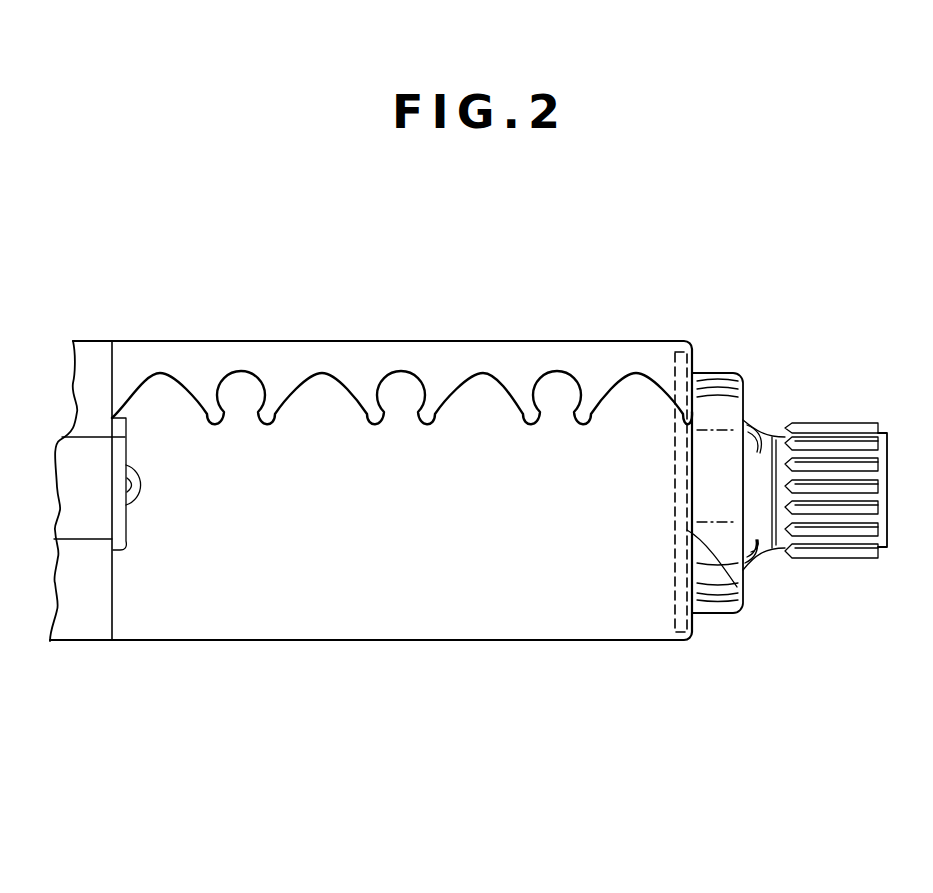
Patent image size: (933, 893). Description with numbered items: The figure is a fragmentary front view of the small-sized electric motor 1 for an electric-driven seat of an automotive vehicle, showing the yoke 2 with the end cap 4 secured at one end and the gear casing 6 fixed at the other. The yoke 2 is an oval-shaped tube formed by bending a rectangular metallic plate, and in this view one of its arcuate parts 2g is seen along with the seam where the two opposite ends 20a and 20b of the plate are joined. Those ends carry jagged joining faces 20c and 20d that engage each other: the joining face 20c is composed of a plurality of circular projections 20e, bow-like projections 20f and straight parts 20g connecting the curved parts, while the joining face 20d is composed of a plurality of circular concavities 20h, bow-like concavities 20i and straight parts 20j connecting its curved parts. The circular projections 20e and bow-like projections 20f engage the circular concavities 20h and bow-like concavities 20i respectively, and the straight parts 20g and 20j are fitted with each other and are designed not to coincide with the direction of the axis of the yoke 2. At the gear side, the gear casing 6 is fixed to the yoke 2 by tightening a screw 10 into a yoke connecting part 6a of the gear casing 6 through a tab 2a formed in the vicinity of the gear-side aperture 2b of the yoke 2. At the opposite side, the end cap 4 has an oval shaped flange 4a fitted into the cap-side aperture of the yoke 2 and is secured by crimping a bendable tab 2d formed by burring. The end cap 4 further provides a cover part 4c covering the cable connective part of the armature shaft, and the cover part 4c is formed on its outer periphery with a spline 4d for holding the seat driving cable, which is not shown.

The small-sized electric motor 1 is at (608, 240).
The yoke 2 is at (133, 348).
The tab 2a is at (118, 520).
The gear-side aperture 2b is at (137, 617).
The bendable tab 2d is at (695, 634).
The arcuate part 2g is at (613, 593).
The end cap 4 is at (742, 375).
The oval shaped flange 4a is at (737, 587).
The cover part 4c is at (880, 480).
The spline 4d is at (840, 433).
The gear casing 6 is at (85, 341).
The yoke connecting part 6a is at (85, 515).
The screw 10 is at (138, 470).
The opposite end 20a is at (380, 463).
The opposite end 20b is at (380, 358).
The joining face 20c is at (687, 373).
The joining face 20d is at (660, 360).
The circular projections 20e is at (243, 383).
The bow-like projections 20f is at (480, 395).
The straight parts 20g is at (290, 410).
The circular concavities 20h is at (407, 358).
The bow-like concavities 20i is at (316, 364).
The straight parts 20j is at (352, 392).